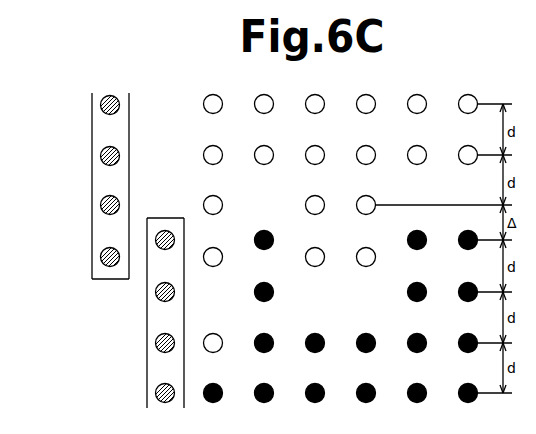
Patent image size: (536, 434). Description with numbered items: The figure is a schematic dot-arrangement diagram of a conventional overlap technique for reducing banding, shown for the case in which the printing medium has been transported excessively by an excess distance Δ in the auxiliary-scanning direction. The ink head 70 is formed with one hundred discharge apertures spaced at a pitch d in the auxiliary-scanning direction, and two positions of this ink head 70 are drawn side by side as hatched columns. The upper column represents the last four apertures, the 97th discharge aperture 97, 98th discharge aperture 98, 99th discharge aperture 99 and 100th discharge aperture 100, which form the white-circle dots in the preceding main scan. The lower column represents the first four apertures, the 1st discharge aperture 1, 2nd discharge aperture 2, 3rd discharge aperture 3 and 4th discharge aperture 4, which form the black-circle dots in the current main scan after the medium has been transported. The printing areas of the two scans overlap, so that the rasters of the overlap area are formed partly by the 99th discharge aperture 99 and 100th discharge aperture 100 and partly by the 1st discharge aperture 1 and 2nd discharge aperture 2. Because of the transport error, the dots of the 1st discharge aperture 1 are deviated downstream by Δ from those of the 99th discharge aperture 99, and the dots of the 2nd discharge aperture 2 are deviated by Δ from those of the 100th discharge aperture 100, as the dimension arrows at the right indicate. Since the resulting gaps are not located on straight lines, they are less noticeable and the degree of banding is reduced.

The ink head 70 is at (123, 128).
The 97th discharge aperture 97 is at (96, 107).
The 98th discharge aperture 98 is at (96, 158).
The 99th discharge aperture 99 is at (96, 207).
The 100th discharge aperture 100 is at (91, 259).
The 1st discharge aperture 1 is at (155, 242).
The 2nd discharge aperture 2 is at (155, 294).
The 3rd discharge aperture 3 is at (155, 345).
The 4th discharge aperture 4 is at (155, 395).